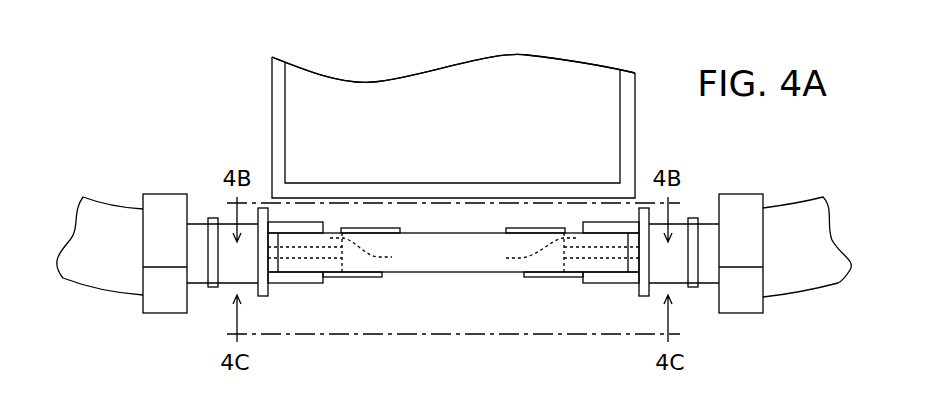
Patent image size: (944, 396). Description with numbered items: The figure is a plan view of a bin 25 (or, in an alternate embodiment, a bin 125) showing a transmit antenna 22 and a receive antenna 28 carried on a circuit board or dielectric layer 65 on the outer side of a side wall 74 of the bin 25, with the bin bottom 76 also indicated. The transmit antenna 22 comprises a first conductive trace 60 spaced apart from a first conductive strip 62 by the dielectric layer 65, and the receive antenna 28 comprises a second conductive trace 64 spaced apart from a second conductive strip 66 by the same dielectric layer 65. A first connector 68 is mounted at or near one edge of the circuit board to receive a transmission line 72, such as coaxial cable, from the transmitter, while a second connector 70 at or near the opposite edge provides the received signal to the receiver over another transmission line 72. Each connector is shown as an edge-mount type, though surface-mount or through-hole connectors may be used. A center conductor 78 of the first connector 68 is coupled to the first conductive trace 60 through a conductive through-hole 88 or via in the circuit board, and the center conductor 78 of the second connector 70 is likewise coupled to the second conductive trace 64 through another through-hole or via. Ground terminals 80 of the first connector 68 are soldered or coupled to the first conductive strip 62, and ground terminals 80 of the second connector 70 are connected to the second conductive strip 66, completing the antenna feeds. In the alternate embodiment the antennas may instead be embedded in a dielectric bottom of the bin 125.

The transmit antenna 22 is at (362, 239).
The bin 25 is at (562, 97).
The bin 125 is at (453, 68).
The receive antenna 28 is at (538, 238).
The first conductive trace 60 is at (376, 228).
The first conductive strip 62 is at (367, 278).
The second conductive trace 64 is at (529, 228).
The dielectric layer 65 is at (459, 255).
The second conductive strip 66 is at (531, 278).
The first connector 68 is at (171, 199).
The second connector 70 is at (687, 215).
The transmission line 72 is at (108, 230).
The side wall 74 is at (280, 98).
The bin bottom 76 is at (345, 108).
The center conductor 78 is at (268, 252).
The ground terminals 80 is at (298, 227).
The conductive through-hole 88 is at (453, 252).